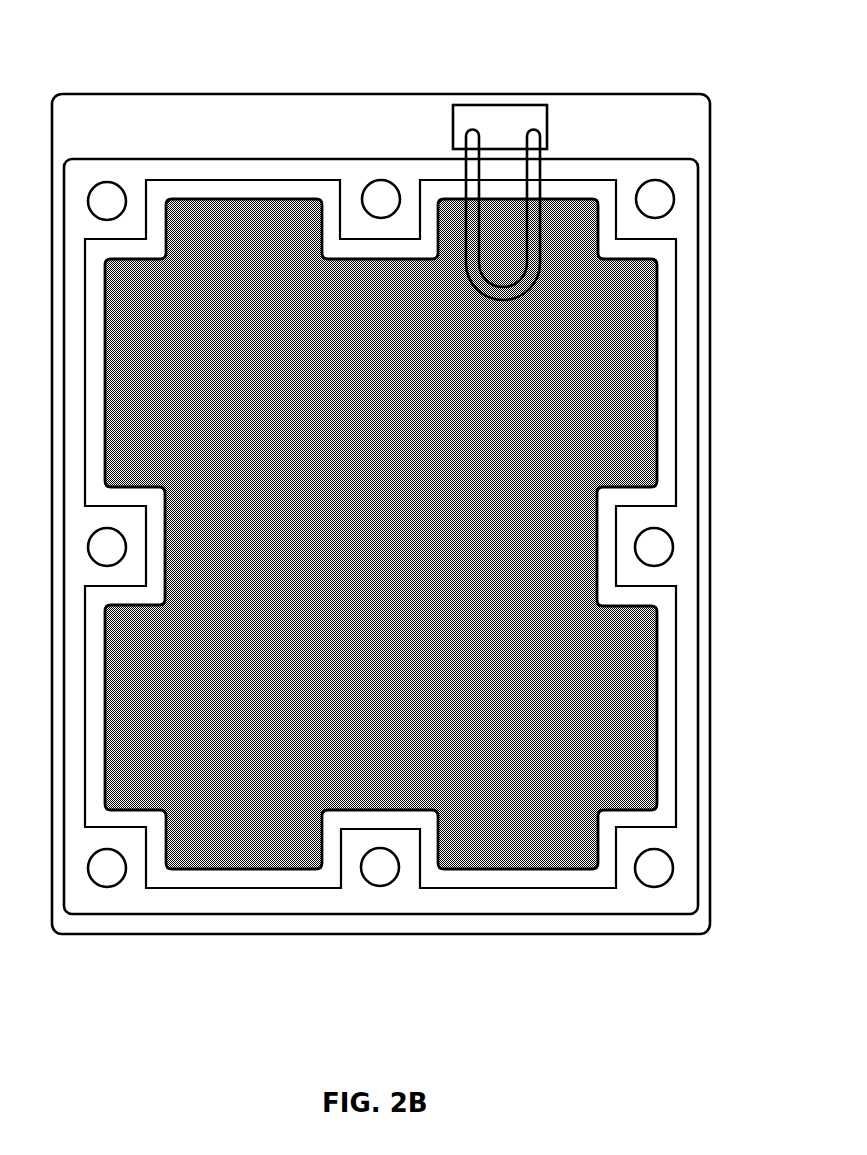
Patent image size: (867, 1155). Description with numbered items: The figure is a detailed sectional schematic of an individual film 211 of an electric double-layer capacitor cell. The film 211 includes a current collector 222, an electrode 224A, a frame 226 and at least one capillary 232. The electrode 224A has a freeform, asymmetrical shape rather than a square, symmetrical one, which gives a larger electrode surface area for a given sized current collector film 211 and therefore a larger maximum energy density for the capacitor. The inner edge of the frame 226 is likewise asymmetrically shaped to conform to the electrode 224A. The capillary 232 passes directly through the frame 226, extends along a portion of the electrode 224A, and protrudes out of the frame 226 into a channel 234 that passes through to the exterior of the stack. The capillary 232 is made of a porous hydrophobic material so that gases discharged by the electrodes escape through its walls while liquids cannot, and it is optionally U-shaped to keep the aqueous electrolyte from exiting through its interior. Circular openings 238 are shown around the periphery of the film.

The film 211 is at (110, 48).
The current collector 222 is at (381, 515).
The electrode 224A is at (381, 534).
The frame 226 is at (380, 546).
The capillary 232 is at (533, 272).
The channel 234 is at (490, 120).
The alignment hole 238 is at (673, 865).